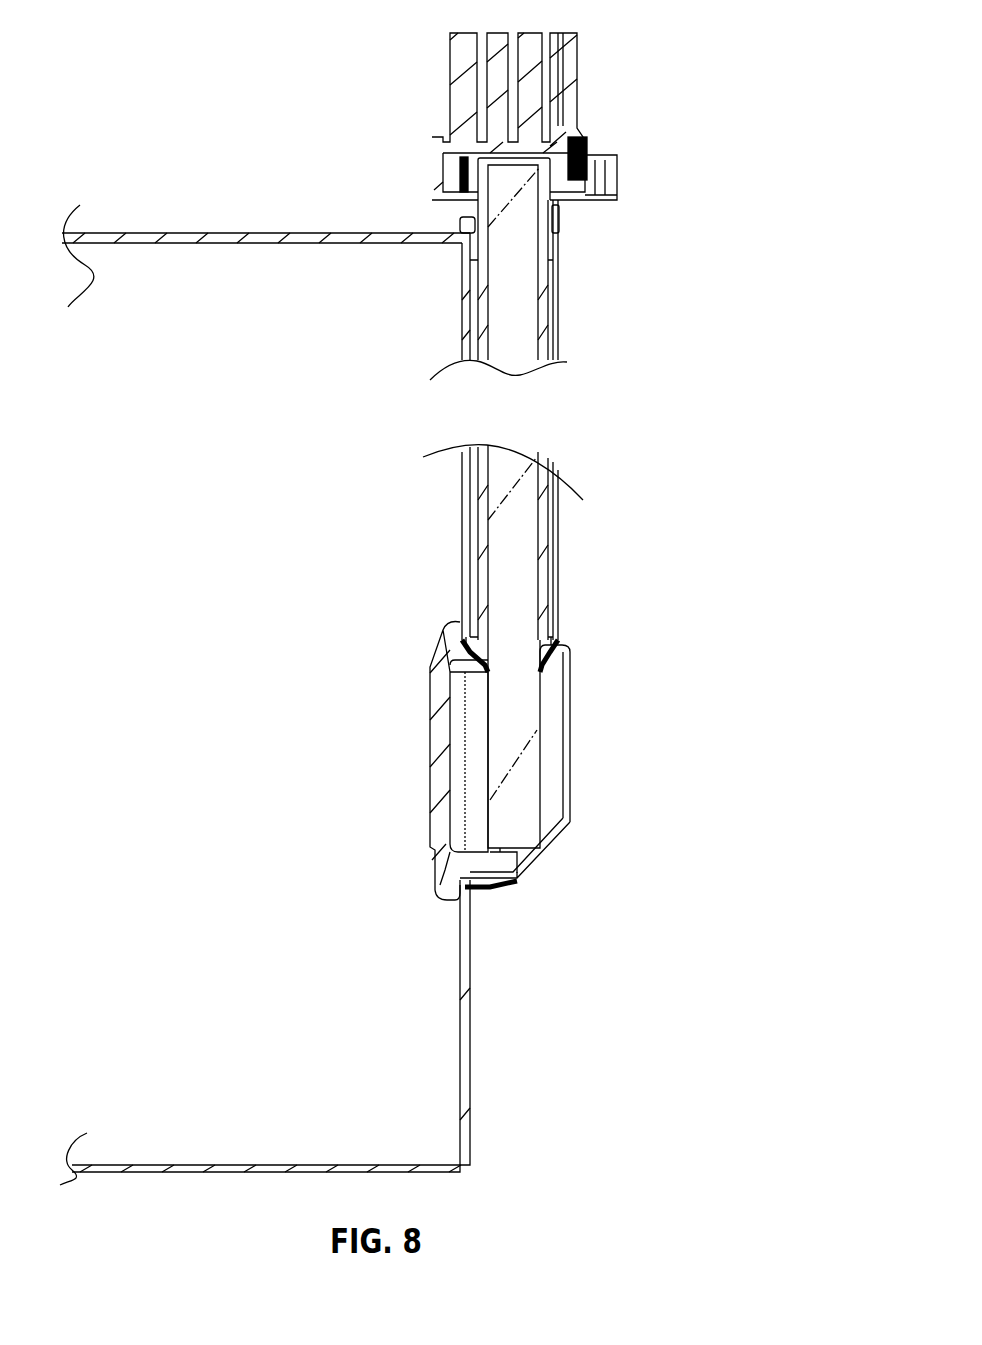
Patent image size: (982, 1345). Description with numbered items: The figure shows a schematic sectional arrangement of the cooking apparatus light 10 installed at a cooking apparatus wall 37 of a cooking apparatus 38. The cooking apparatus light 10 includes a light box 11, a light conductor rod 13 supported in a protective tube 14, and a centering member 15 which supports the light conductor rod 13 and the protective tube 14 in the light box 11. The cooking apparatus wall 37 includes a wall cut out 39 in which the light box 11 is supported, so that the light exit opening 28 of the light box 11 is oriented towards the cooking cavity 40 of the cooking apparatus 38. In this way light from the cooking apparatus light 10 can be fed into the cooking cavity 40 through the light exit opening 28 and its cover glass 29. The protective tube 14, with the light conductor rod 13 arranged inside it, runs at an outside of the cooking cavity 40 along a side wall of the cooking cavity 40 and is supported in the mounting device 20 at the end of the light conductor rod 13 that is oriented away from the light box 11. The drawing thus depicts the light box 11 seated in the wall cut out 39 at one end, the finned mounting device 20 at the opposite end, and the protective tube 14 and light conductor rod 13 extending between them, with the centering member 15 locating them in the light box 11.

The cooking apparatus light 10 is at (625, 300).
The light box 11 is at (583, 702).
The light conductor rod 13 is at (517, 590).
The protective tube 14 is at (570, 535).
The centering member 15 is at (455, 630).
The mounting device 20 is at (628, 172).
The light exit opening 28 is at (460, 755).
The cover glass 29 is at (430, 833).
The cooking apparatus wall 37 is at (485, 1097).
The cooking apparatus 38 is at (173, 212).
The wall cut out 39 is at (505, 895).
The cooking cavity 40 is at (210, 548).